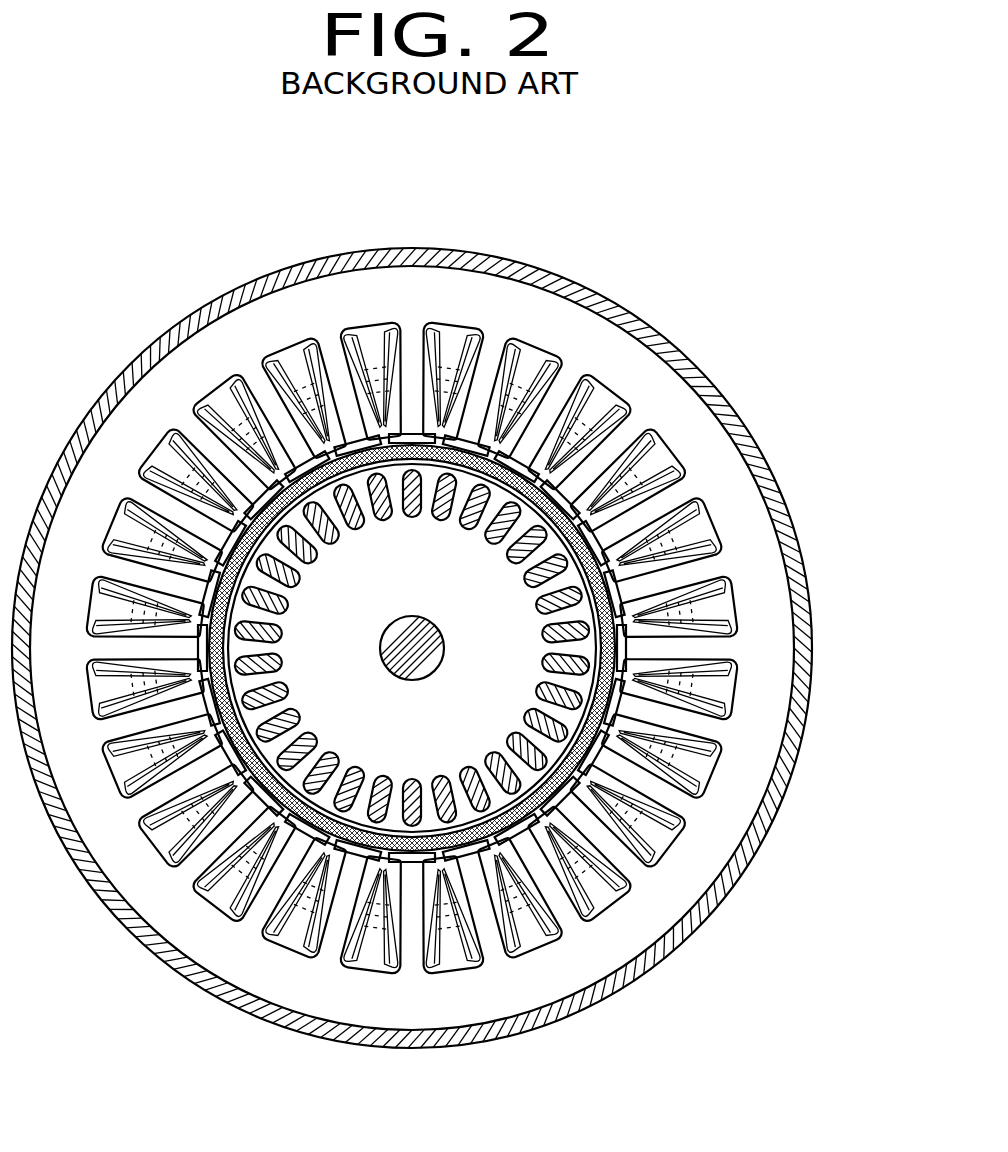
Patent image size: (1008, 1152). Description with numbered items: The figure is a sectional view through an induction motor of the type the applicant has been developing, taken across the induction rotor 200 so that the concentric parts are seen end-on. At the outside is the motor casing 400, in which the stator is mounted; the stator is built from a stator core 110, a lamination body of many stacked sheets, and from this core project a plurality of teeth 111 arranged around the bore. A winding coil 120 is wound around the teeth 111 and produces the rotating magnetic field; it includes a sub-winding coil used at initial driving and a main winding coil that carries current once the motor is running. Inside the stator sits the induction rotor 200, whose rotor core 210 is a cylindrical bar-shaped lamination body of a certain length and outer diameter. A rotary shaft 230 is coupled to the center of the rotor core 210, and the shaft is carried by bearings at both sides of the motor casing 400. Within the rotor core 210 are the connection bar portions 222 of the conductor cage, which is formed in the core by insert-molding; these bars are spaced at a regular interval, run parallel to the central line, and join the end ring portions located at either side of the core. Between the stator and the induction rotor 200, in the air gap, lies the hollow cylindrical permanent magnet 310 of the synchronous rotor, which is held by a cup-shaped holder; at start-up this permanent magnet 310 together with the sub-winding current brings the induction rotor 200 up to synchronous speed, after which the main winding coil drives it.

The stator core 110 is at (733, 823).
The teeth 111 is at (560, 398).
The winding coil 120 is at (620, 897).
The induction rotor 200 is at (552, 607).
The rotor core 210 is at (552, 607).
The connection bar portions 222 is at (540, 488).
The rotary shaft 230 is at (430, 647).
The permanent magnet 310 is at (575, 513).
The motor casing 400 is at (793, 493).